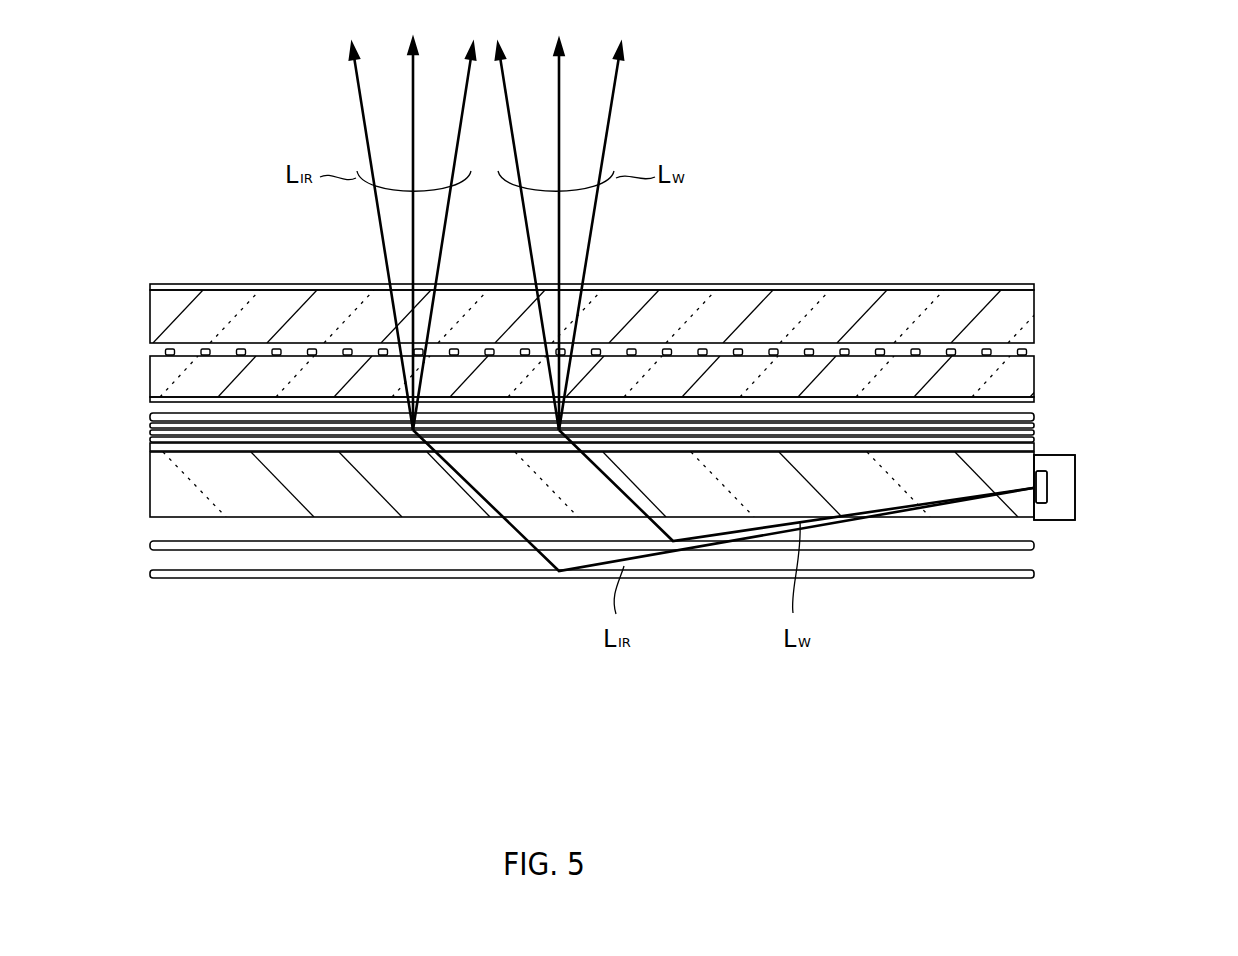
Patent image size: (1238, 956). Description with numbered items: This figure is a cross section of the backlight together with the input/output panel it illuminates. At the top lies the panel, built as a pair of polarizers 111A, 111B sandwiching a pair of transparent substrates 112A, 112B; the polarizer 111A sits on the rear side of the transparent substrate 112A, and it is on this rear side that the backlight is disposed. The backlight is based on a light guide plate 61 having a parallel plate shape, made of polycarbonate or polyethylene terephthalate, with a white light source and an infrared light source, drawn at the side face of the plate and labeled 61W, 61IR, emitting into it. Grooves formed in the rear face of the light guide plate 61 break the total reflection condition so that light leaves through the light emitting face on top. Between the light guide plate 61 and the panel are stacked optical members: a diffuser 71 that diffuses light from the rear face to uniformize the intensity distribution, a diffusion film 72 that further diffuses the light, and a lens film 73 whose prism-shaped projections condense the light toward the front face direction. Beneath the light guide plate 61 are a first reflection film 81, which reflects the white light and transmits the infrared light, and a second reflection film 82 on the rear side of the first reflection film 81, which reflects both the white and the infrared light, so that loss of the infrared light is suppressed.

The polarizer 111B is at (148, 288).
The transparent substrate 112B is at (148, 323).
The transparent substrate 112A is at (148, 357).
The polarizer 111A is at (148, 398).
The lens film 73 is at (150, 416).
The diffusion film 72 is at (150, 429).
The diffuser 71 is at (150, 444).
The light guide plate 61 is at (148, 500).
The first reflection film 81 is at (148, 544).
The second reflection film 82 is at (148, 573).
The white light source 61W is at (1077, 488).
The infrared light source 61IR is at (1054, 487).